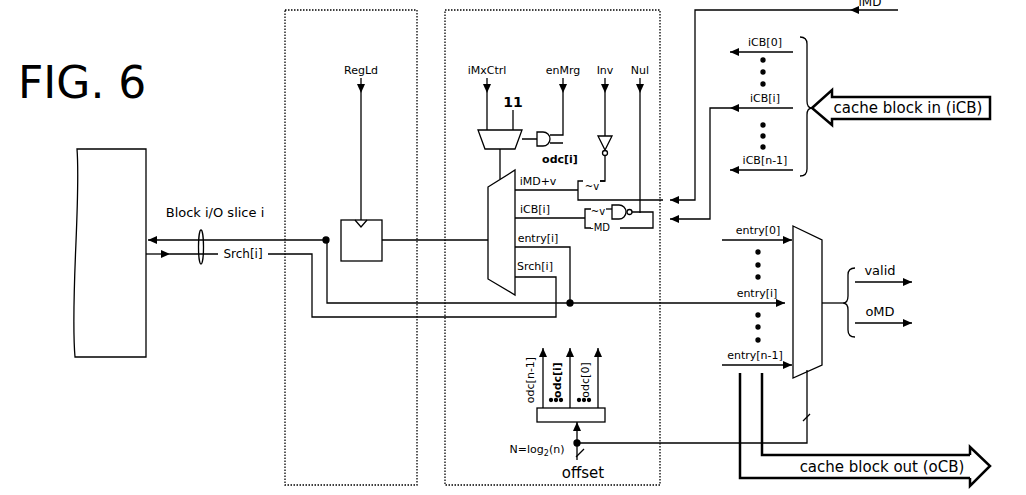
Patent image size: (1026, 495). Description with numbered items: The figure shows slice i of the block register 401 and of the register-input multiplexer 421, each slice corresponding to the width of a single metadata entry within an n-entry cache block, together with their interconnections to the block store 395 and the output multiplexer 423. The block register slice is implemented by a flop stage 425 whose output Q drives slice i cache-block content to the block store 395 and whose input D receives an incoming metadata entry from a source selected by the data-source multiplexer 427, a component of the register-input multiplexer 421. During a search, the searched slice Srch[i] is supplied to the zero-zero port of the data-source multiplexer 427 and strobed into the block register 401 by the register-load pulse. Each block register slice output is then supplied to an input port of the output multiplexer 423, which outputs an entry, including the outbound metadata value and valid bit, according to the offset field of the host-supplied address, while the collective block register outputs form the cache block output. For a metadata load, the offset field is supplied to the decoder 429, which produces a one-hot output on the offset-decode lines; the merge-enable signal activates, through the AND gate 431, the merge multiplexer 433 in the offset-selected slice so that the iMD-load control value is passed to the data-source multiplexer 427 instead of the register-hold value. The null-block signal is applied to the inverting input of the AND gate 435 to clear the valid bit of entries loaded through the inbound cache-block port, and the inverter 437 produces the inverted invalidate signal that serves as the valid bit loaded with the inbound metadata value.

The block store 395 is at (110, 253).
The block register 401 is at (386, 10).
The register-input multiplexer 421 is at (547, 10).
The output multiplexer 423 is at (824, 244).
The flop stage 425 is at (381, 263).
The data-source multiplexer 427 is at (487, 200).
The decoder 429 is at (608, 418).
The AND gate 431 is at (538, 129).
The merge multiplexer 433 is at (485, 150).
The AND gate 435 is at (618, 203).
The inverter 437 is at (601, 130).